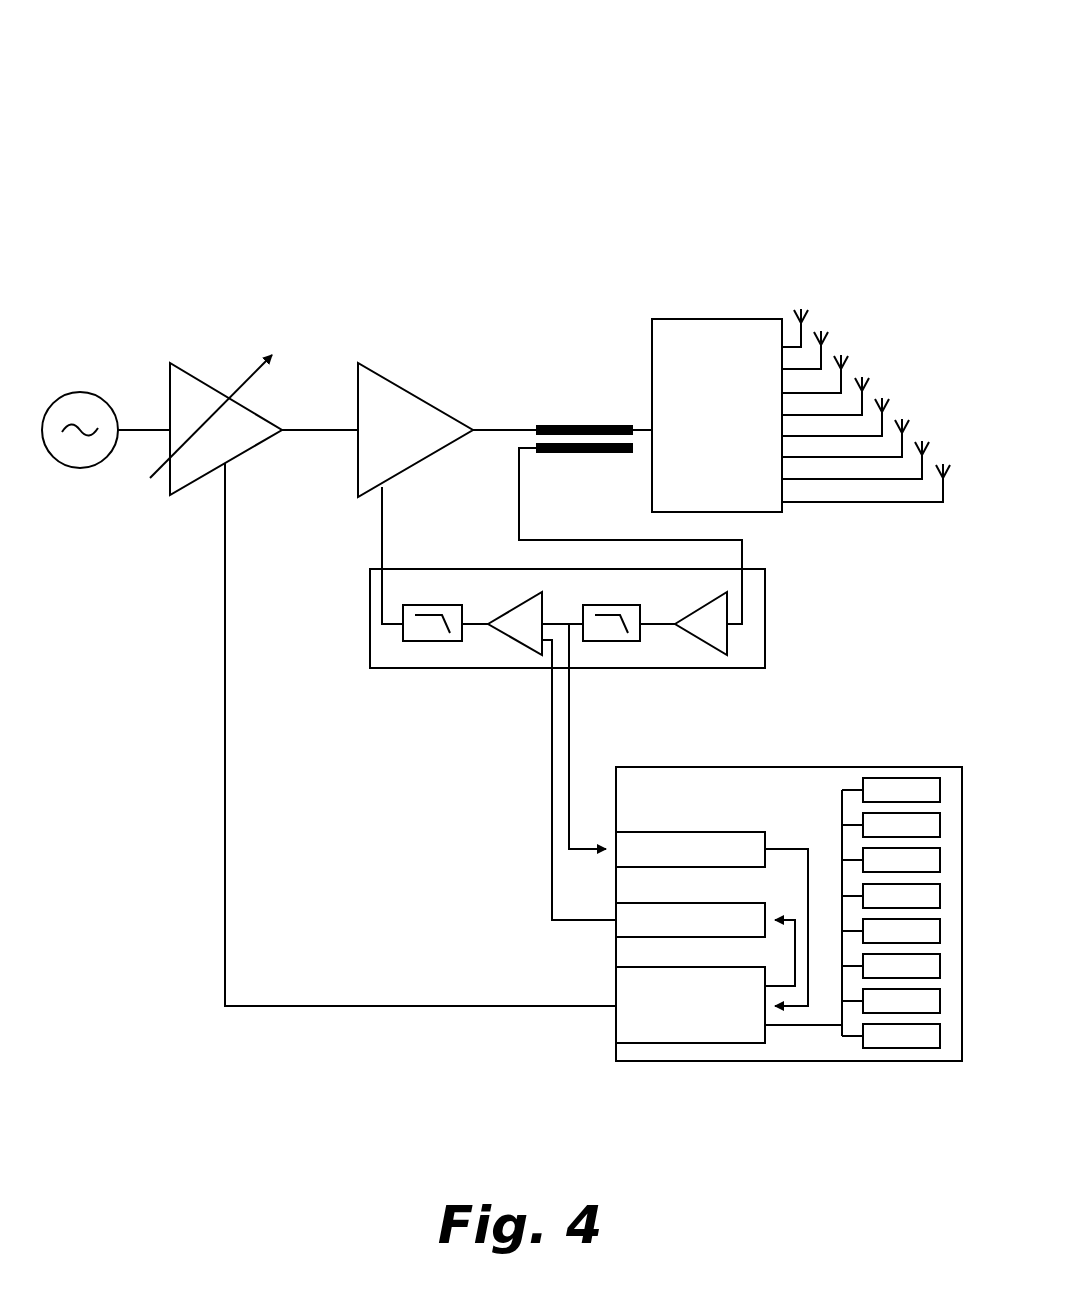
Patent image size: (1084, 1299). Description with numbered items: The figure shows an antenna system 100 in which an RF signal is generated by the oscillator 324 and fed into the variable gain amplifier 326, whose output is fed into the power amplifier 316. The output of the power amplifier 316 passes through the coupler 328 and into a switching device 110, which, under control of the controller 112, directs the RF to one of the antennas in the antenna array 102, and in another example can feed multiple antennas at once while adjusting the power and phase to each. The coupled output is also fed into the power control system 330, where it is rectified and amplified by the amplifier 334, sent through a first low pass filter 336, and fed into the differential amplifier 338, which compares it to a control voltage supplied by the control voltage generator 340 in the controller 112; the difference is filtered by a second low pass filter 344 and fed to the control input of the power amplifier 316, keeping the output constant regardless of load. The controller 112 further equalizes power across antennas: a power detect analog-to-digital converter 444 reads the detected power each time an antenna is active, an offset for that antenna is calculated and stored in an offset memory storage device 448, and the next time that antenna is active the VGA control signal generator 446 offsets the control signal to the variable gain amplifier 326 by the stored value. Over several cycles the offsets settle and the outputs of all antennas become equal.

The antenna system 100 is at (333, 82).
The antenna array 102 is at (878, 306).
The switching device 110 is at (700, 456).
The controller 112 is at (743, 912).
The power amplifier 316 is at (408, 402).
The oscillator 324 is at (104, 409).
The variable gain amplifier 326 is at (229, 404).
The coupler 328 is at (591, 432).
The power control system 330 is at (607, 654).
The amplifier 334 is at (715, 645).
The first low pass filter 336 is at (612, 643).
The differential amplifier 338 is at (523, 644).
The control voltage generator 340 is at (632, 929).
The second low pass filter 344 is at (424, 643).
The power detect analog-to-digital converter 444 is at (757, 850).
The VGA control signal generator 446 is at (632, 1025).
The offset memory storage device 448 is at (912, 1032).